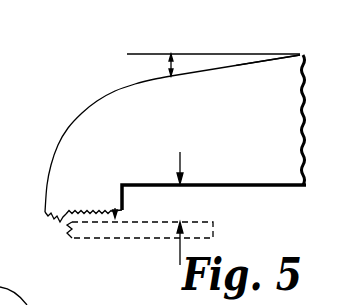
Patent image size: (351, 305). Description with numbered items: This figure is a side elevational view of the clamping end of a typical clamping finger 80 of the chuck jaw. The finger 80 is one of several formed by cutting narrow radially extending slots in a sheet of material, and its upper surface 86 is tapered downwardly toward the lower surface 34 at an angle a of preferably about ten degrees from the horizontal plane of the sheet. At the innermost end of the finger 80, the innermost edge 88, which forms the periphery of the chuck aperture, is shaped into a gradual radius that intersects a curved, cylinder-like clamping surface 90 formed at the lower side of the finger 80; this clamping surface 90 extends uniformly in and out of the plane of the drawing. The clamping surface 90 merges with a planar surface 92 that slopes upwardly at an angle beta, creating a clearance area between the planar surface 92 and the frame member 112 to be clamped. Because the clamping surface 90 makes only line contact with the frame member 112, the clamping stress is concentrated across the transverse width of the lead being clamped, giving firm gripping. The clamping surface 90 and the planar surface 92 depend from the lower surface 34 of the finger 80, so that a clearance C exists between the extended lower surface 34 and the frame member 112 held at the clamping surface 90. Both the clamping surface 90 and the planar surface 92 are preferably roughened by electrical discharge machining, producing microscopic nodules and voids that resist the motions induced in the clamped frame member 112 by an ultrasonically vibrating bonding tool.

The finger 80 is at (248, 126).
The upper surface 86 is at (210, 71).
The innermost edge 88 is at (65, 133).
The clamping surface 90 is at (62, 221).
The planar surface 92 is at (85, 210).
The lower surface 34 is at (225, 187).
The frame member 112 is at (100, 238).
The angle a is at (170, 65).
The clearance C is at (177, 208).